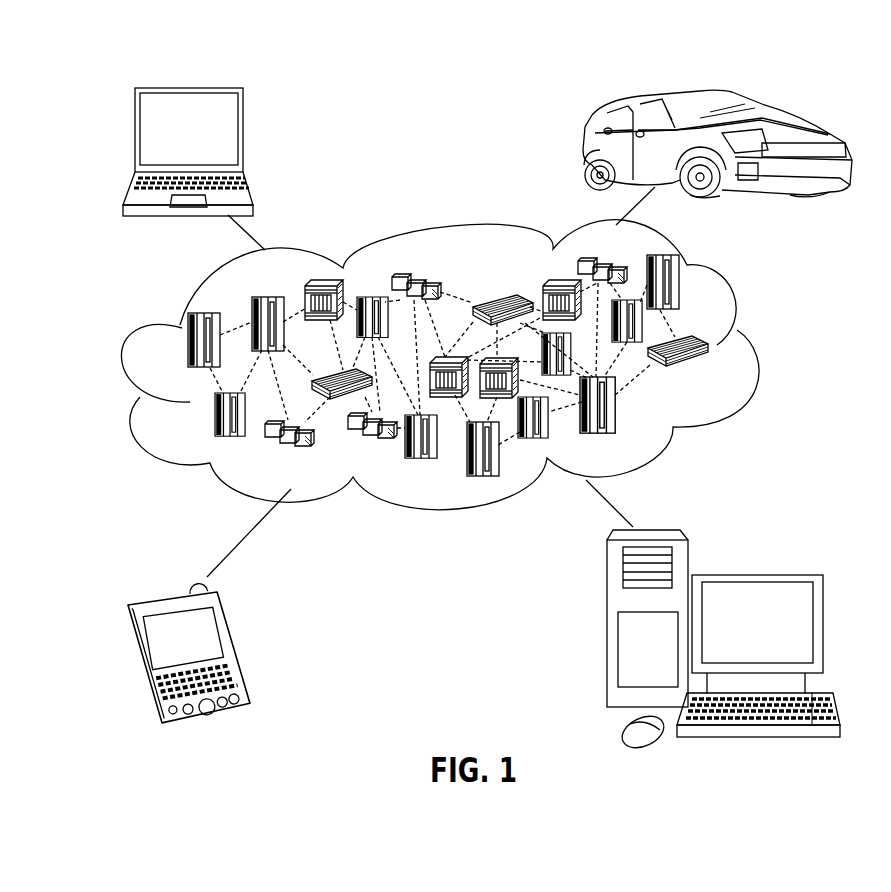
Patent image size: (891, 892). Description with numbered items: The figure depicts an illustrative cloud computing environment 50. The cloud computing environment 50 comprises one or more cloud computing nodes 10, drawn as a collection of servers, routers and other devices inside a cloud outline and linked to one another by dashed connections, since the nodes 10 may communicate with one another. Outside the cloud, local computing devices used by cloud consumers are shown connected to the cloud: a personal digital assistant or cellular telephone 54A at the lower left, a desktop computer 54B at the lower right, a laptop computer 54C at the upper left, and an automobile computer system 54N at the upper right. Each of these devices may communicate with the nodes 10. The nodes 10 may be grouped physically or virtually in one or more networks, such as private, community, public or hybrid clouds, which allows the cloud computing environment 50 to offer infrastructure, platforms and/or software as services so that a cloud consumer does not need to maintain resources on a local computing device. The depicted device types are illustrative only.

The cloud computing node 10 is at (708, 369).
The cloud computing environment 50 is at (755, 349).
The personal digital assistant (PDA) or cellular telephone 54A is at (233, 648).
The desktop computer 54B is at (753, 575).
The laptop computer 54C is at (243, 135).
The automobile computer system 54N is at (585, 148).